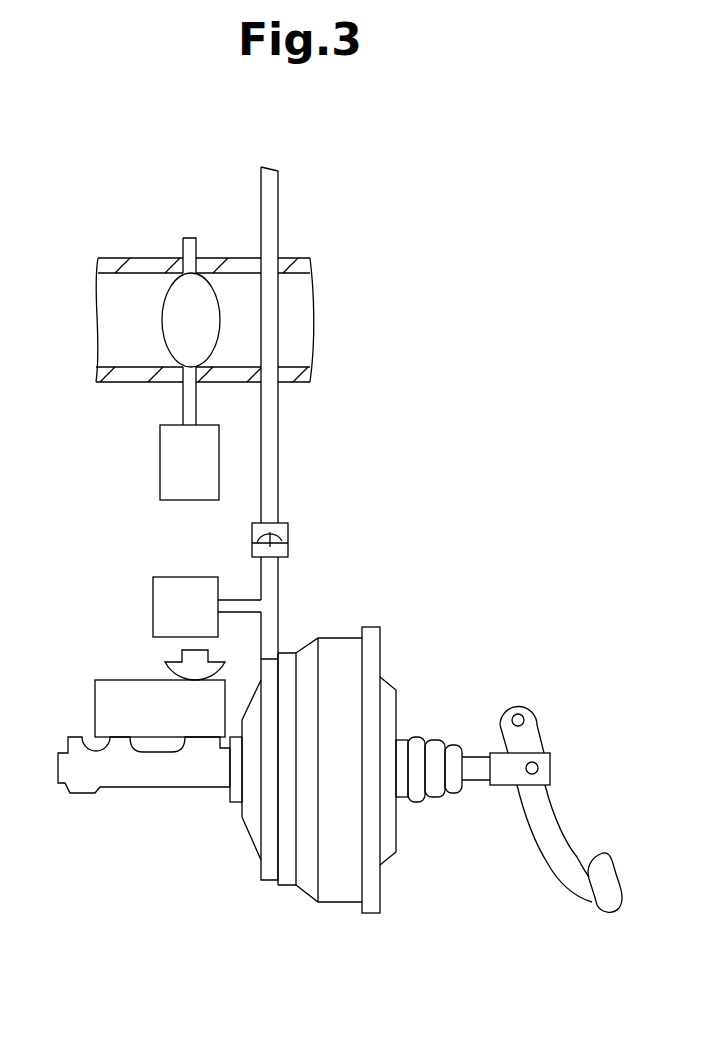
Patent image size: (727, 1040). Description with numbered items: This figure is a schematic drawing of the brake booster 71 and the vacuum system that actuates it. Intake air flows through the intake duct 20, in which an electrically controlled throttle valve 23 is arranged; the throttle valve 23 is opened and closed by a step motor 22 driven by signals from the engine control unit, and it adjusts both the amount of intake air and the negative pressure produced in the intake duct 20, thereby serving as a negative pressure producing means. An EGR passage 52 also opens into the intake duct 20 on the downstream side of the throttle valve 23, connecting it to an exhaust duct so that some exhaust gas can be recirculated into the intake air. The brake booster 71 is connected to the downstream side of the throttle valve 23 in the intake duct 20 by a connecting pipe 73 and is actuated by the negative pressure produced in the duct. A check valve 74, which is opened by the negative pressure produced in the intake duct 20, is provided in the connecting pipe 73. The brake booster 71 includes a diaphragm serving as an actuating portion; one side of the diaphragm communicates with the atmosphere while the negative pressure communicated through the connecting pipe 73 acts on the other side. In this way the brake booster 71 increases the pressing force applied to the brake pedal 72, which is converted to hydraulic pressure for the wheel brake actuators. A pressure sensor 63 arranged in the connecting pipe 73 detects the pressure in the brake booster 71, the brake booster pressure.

The intake duct 20 is at (148, 258).
The step motor 22 is at (160, 465).
The throttle valve 23 is at (165, 337).
The EGR passage 52 is at (279, 214).
The pressure sensor 63 is at (153, 600).
The brake booster 71 is at (269, 945).
The brake pedal 72 is at (606, 880).
The connecting pipe 73 is at (279, 465).
The check valve 74 is at (288, 530).